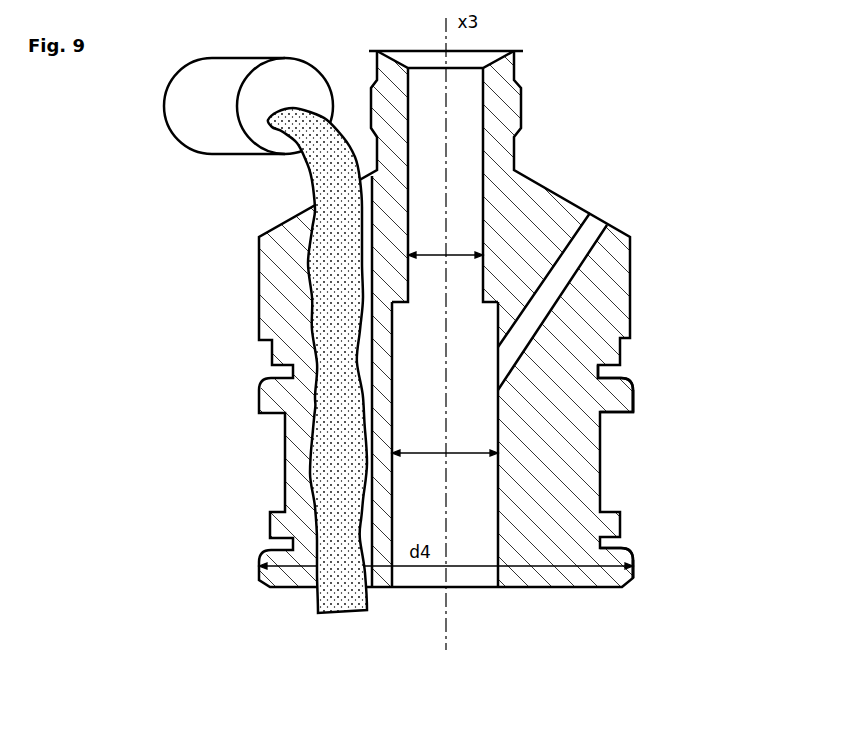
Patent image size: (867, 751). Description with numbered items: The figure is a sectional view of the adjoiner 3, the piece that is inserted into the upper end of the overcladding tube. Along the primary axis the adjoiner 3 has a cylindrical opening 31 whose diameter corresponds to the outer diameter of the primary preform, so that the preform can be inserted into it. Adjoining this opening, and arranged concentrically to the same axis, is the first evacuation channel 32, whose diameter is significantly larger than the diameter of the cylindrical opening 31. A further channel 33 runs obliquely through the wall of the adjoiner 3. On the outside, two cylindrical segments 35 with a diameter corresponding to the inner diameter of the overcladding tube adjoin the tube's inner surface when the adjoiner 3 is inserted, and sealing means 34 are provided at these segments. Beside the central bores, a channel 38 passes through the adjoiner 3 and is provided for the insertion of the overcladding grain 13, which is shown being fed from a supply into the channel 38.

The adjoiner 3 is at (642, 143).
The overcladding grain 13 is at (300, 167).
The cylindrical opening 31 is at (462, 134).
The first evacuation channel 32 is at (500, 413).
The channel 33 is at (527, 335).
The sealing means 34 is at (617, 375).
The cylindrical segments 35 is at (642, 555).
The channel 38 is at (313, 428).